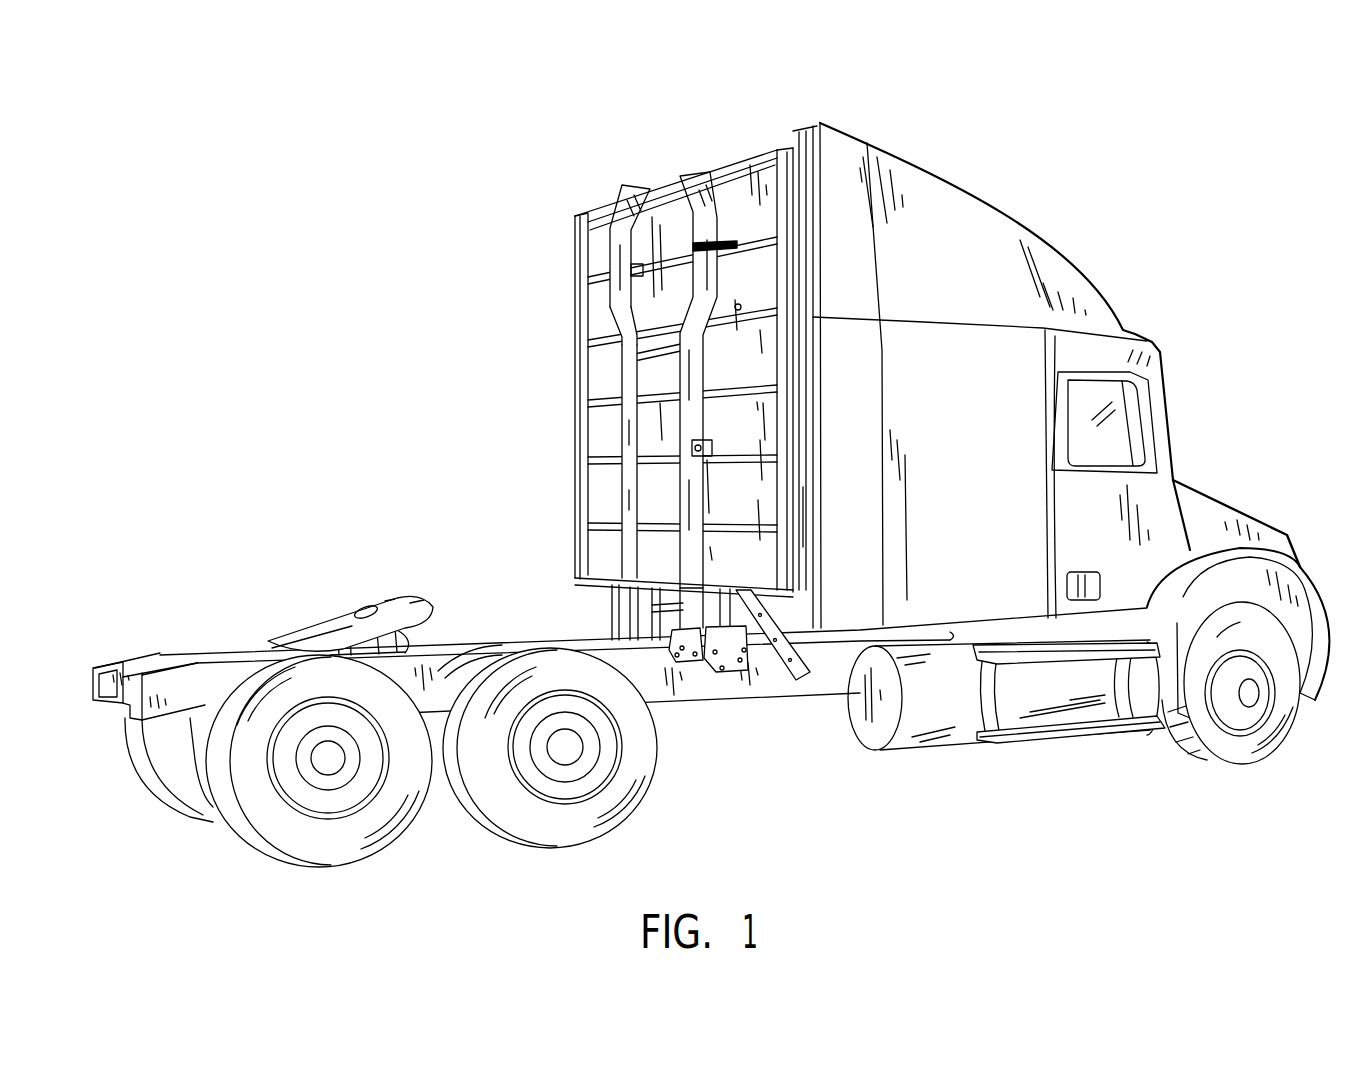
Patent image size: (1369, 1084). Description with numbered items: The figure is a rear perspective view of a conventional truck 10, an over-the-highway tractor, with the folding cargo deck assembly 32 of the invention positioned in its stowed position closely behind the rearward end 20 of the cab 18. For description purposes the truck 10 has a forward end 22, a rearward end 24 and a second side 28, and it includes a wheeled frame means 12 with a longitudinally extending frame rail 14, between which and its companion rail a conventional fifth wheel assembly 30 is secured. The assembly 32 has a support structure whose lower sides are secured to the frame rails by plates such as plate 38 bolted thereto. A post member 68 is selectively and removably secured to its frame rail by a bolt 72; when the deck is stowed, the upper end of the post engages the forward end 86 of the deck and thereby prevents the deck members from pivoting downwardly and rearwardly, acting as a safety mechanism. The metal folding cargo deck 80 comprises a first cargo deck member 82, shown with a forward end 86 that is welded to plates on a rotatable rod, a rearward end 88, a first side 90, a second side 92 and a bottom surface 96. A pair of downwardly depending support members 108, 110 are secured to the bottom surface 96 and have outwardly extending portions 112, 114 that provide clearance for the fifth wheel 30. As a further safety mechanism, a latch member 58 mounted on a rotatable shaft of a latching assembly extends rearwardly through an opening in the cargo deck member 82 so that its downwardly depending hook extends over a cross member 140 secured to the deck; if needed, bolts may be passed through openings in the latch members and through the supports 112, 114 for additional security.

The truck 10 is at (1074, 226).
The wheeled frame means 12 is at (484, 636).
The frame rail 14 is at (150, 648).
The cab 18 is at (1100, 343).
The rearward end 20 is at (806, 423).
The forward end 22 is at (1306, 557).
The rearward end 24 is at (80, 688).
The second side 28 is at (865, 826).
The fifth wheel assembly 30 is at (404, 598).
The folding cargo deck assembly 32 is at (705, 325).
The plate 38 is at (744, 670).
The latch member 58 is at (703, 457).
The post member 68 is at (656, 650).
The bolt 72 is at (683, 657).
The metal folding cargo deck 80 is at (737, 146).
The first cargo deck member 82 is at (758, 190).
The forward end 86 is at (767, 590).
The rearward end 88 is at (668, 188).
The first side 90 is at (575, 478).
The second side 92 is at (790, 477).
The bottom surface 96 is at (751, 432).
The support member 108 is at (608, 310).
The support member 110 is at (711, 287).
The outwardly extending portion 112 is at (640, 267).
The outwardly extending portion 114 is at (819, 250).
The cross member 140 is at (636, 487).